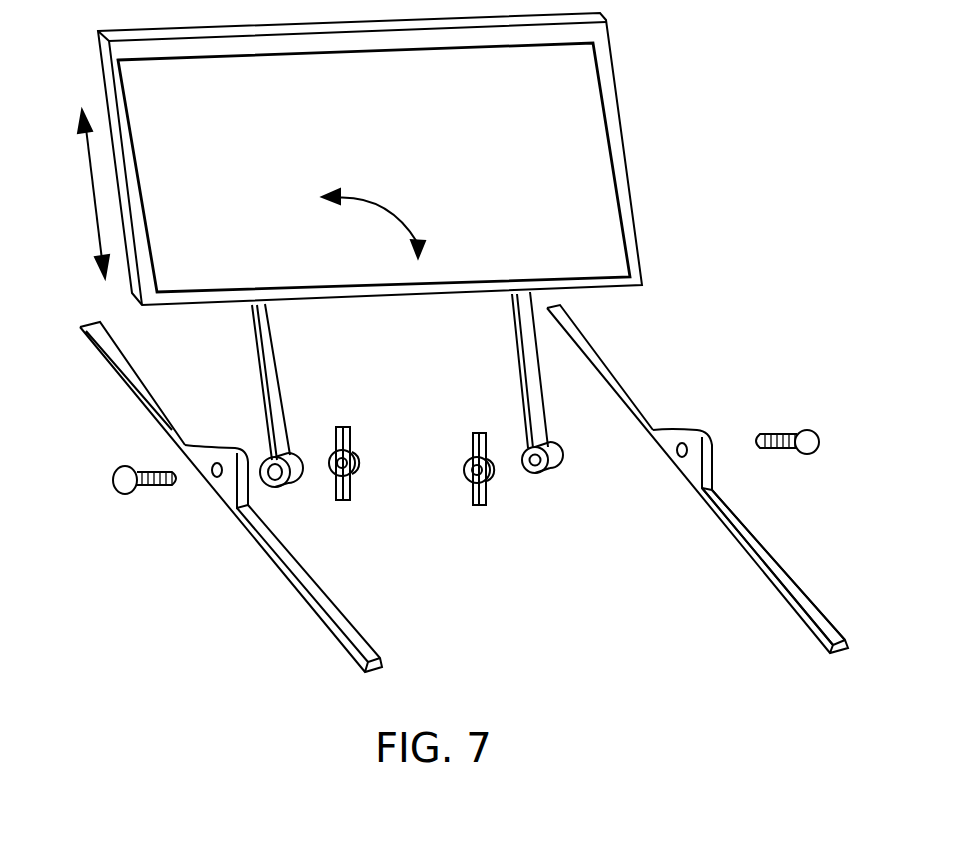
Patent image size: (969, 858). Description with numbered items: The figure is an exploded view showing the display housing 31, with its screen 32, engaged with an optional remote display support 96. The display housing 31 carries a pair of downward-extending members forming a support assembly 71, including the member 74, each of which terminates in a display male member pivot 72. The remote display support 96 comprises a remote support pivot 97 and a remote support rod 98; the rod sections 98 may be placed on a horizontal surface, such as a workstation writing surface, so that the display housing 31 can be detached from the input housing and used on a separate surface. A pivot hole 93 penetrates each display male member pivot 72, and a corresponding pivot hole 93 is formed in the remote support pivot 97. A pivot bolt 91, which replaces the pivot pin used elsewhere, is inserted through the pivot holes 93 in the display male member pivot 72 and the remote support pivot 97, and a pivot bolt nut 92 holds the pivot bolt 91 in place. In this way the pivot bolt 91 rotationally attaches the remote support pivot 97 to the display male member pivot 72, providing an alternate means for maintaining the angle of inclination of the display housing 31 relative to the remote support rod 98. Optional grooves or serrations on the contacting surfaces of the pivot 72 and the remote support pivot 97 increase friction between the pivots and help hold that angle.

The display housing 31 is at (652, 123).
The display screen 32 is at (563, 185).
The support strut assembly 71 is at (494, 350).
The display male member pivot 72 is at (293, 483).
The support strut 74 is at (260, 315).
The pivot bolt 91 is at (150, 470).
The pivot bolt nut 92 is at (353, 458).
The pivot hole 93 is at (522, 460).
The remote display support 96 is at (660, 387).
The remote support pivot 97 is at (712, 457).
The remote support rod 98 is at (793, 588).